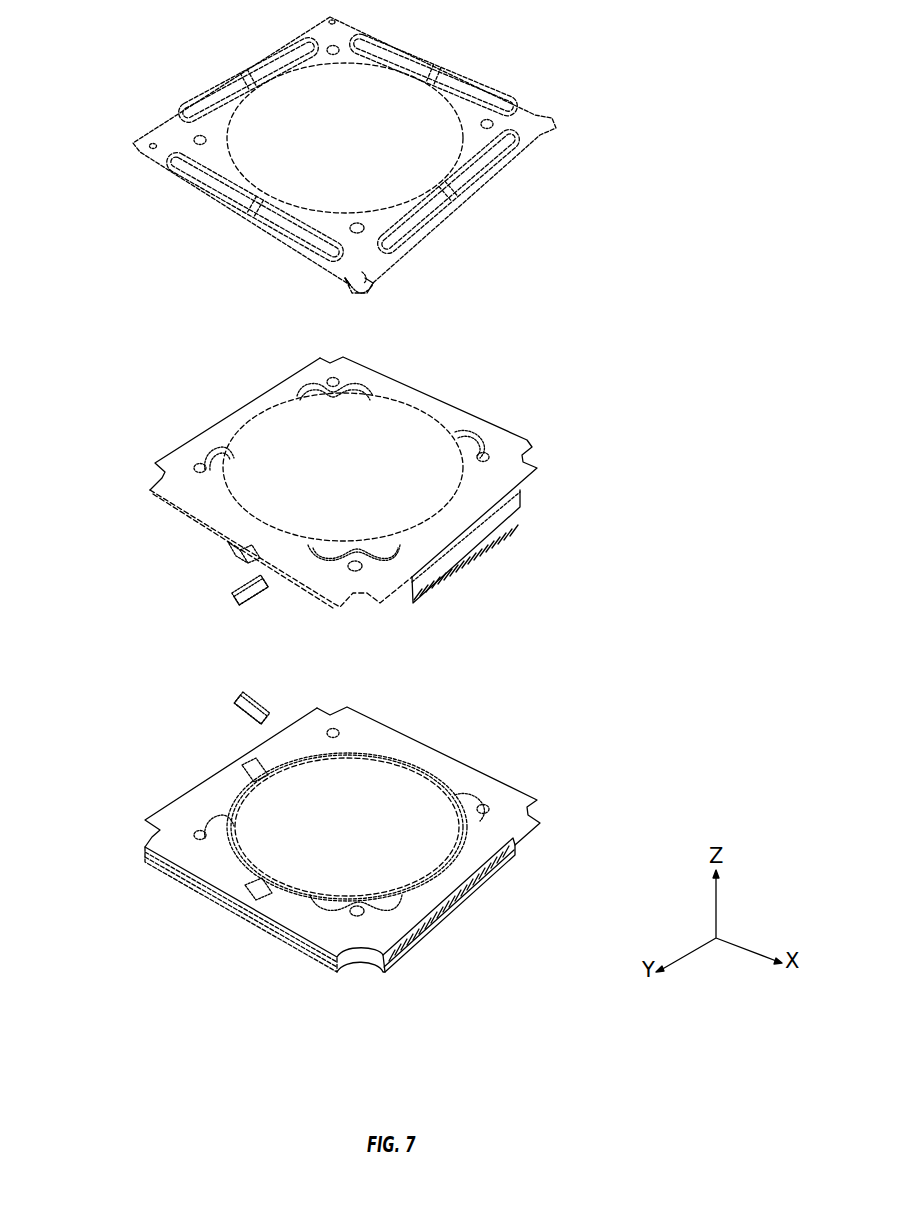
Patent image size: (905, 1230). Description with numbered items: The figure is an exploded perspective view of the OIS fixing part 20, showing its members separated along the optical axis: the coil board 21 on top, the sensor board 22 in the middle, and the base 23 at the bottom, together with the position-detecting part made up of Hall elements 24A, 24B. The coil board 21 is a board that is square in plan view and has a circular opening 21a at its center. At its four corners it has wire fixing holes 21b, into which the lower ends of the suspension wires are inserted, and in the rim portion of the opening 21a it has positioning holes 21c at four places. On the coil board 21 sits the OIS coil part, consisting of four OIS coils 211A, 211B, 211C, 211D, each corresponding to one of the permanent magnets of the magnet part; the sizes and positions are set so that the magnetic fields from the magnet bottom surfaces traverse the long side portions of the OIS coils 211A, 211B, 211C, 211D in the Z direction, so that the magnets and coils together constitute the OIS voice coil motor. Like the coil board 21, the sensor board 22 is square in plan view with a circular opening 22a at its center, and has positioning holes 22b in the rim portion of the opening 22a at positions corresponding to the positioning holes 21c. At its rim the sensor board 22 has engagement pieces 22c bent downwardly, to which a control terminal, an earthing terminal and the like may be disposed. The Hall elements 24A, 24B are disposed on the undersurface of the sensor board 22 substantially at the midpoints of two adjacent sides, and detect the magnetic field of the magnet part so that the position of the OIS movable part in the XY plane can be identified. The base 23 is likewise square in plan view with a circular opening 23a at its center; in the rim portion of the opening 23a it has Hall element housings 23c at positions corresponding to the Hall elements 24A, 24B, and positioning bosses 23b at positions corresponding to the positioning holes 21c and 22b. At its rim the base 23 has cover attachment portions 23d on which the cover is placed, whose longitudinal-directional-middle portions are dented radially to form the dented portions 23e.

The OIS fixing part 20 is at (652, 120).
The coil board 21 is at (530, 148).
The opening 21a is at (425, 95).
The wire fixing holes 21b is at (366, 274).
The positioning holes 21c is at (357, 223).
The OIS coil 211A is at (440, 215).
The OIS coil 211B is at (475, 78).
The OIS coil 211C is at (190, 118).
The OIS coil 211D is at (215, 203).
The sensor board 22 is at (527, 476).
The opening 22a is at (423, 420).
The positioning holes 22b is at (356, 560).
The engagement pieces 22c is at (232, 552).
The base 23 is at (527, 832).
The opening 23a is at (425, 770).
The positioning bosses 23b is at (356, 905).
The Hall element housings 23c is at (258, 772).
The cover attachment portions 23d is at (165, 872).
The dented portions 23e is at (240, 910).
The Hall element 24A is at (236, 598).
The Hall element 24B is at (240, 710).